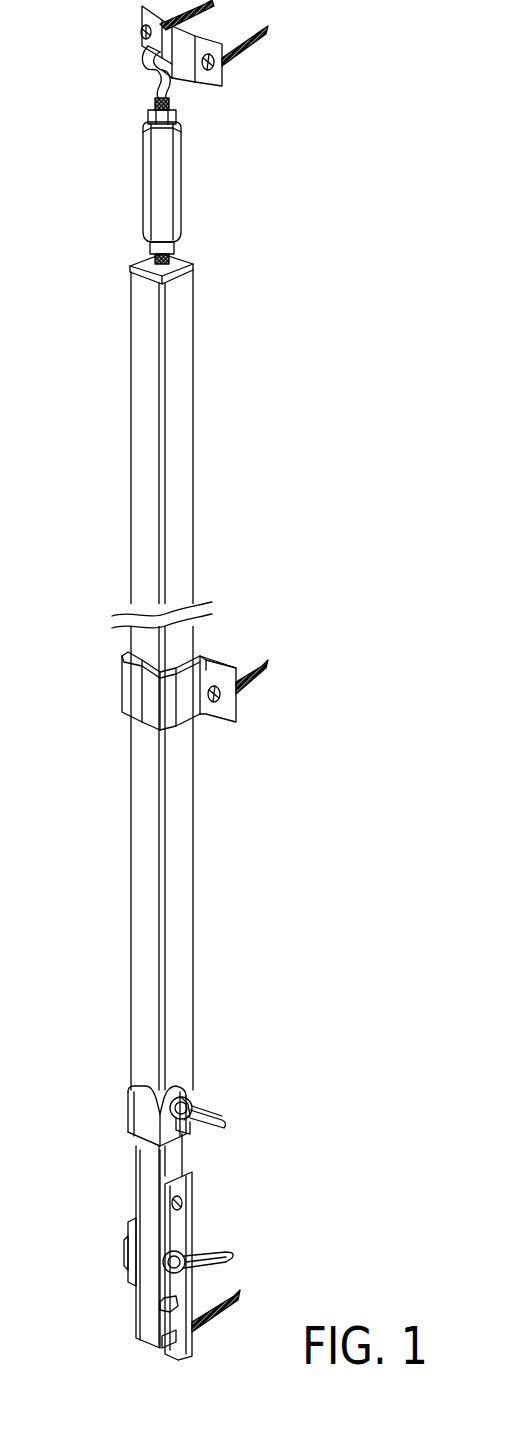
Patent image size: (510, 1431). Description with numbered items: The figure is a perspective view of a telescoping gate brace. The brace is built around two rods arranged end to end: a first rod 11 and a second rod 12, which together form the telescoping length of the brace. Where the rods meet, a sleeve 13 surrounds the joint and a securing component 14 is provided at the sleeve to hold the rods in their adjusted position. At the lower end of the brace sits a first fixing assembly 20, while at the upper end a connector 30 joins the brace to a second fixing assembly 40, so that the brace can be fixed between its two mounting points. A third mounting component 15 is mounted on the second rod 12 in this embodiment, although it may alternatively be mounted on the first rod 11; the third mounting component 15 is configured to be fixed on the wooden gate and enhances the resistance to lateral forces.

The first rod 11 is at (138, 1152).
The second rod 12 is at (138, 420).
The sleeve 13 is at (192, 1128).
The securing component 14 is at (192, 1100).
The third mounting component 15 is at (132, 690).
The first fixing assembly 20 is at (118, 1229).
The connector 30 is at (124, 210).
The second fixing assembly 40 is at (292, 32).